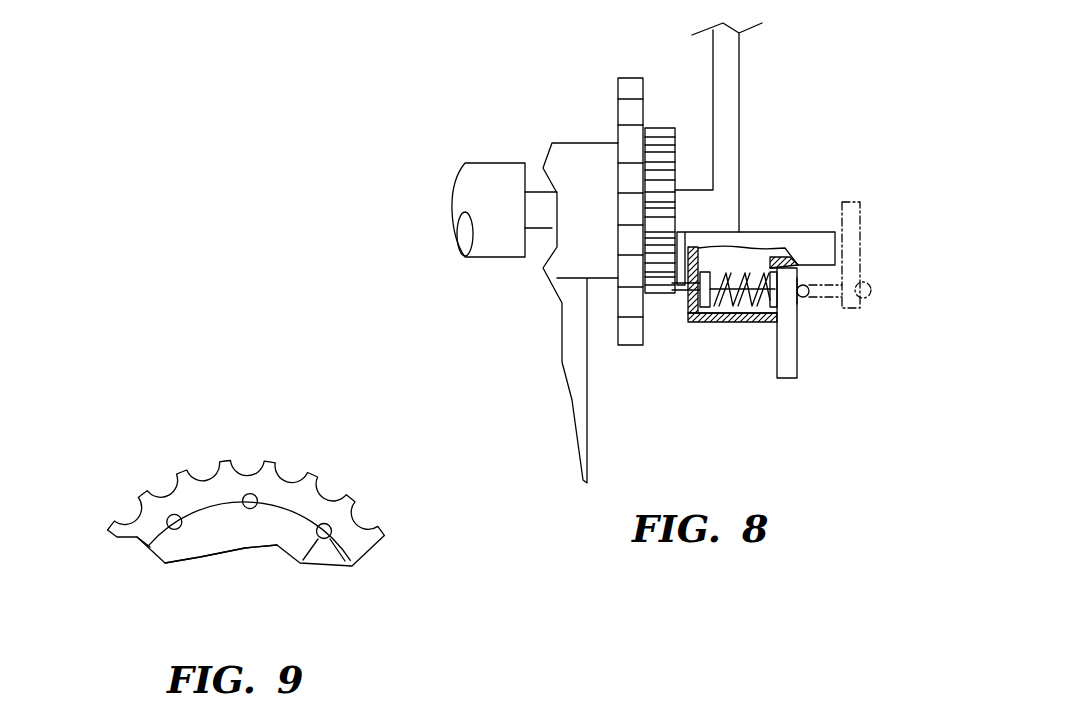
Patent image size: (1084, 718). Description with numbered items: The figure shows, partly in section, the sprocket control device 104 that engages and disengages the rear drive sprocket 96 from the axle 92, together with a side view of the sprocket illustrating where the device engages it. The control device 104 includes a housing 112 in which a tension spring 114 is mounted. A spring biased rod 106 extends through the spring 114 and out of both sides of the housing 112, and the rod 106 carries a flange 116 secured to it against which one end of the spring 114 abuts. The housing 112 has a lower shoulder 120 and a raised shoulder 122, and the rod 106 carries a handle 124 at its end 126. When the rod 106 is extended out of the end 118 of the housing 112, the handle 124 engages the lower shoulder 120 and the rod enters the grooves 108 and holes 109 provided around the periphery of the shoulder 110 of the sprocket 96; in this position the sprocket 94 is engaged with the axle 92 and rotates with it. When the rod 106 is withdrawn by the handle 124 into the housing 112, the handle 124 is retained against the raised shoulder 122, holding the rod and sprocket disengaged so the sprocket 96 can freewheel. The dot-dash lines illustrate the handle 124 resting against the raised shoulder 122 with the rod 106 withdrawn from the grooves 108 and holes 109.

In FIG. 8, the axle 92 is at (487, 163).
In FIG. 9, the sprocket 94 is at (268, 475).
In FIG. 8, the drive sprocket 96 is at (618, 118).
In FIG. 8, the control device 104 is at (776, 290).
In FIG. 8, the rod 106 is at (812, 296).
In FIG. 9, the grooves 108 is at (300, 560).
In FIG. 9, the holes 109 is at (346, 514).
In FIG. 8, the shoulder 110 is at (675, 142).
In FIG. 9, the shoulder 110 is at (203, 540).
In FIG. 8, the housing 112 is at (753, 230).
In FIG. 8, the tension spring 114 is at (738, 307).
In FIG. 8, the flange 116 is at (700, 305).
In FIG. 8, the end of housing 118 is at (697, 307).
In FIG. 8, the lower shoulder 120 is at (795, 297).
In FIG. 8, the raised shoulder 122 is at (835, 243).
In FIG. 8, the handle 124 is at (863, 260).
In FIG. 8, the end of rod 126 is at (770, 305).